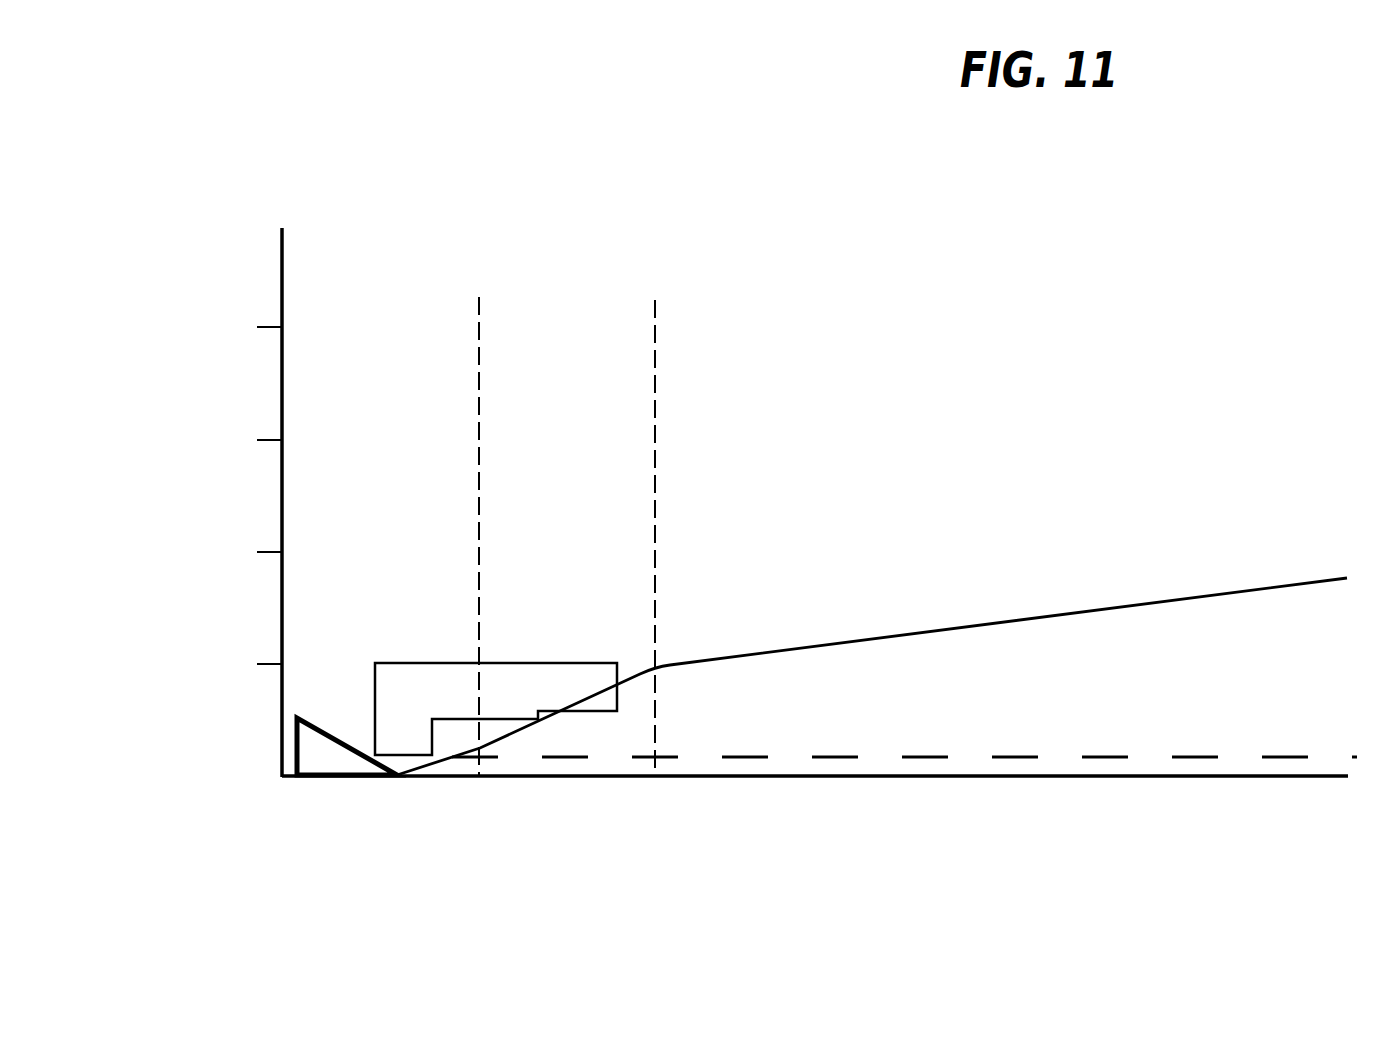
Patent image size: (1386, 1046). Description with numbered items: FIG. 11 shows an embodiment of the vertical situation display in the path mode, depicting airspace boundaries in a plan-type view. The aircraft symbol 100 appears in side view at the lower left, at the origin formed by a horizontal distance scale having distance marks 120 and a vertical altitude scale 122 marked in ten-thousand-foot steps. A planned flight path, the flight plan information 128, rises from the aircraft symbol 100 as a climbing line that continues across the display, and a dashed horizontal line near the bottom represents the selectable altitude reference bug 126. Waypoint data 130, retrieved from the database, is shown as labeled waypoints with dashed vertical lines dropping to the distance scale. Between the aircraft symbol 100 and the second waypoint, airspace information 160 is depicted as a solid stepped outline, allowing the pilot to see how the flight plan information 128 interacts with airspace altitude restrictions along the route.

The aircraft symbol 100 is at (320, 732).
The distance marks 120 is at (447, 809).
The altitude scale 122 is at (132, 570).
The altitude reference bug 126 is at (1273, 750).
The flight plan information 128 is at (1055, 613).
The waypoint data 130 is at (503, 216).
The airspace information 160 is at (573, 662).